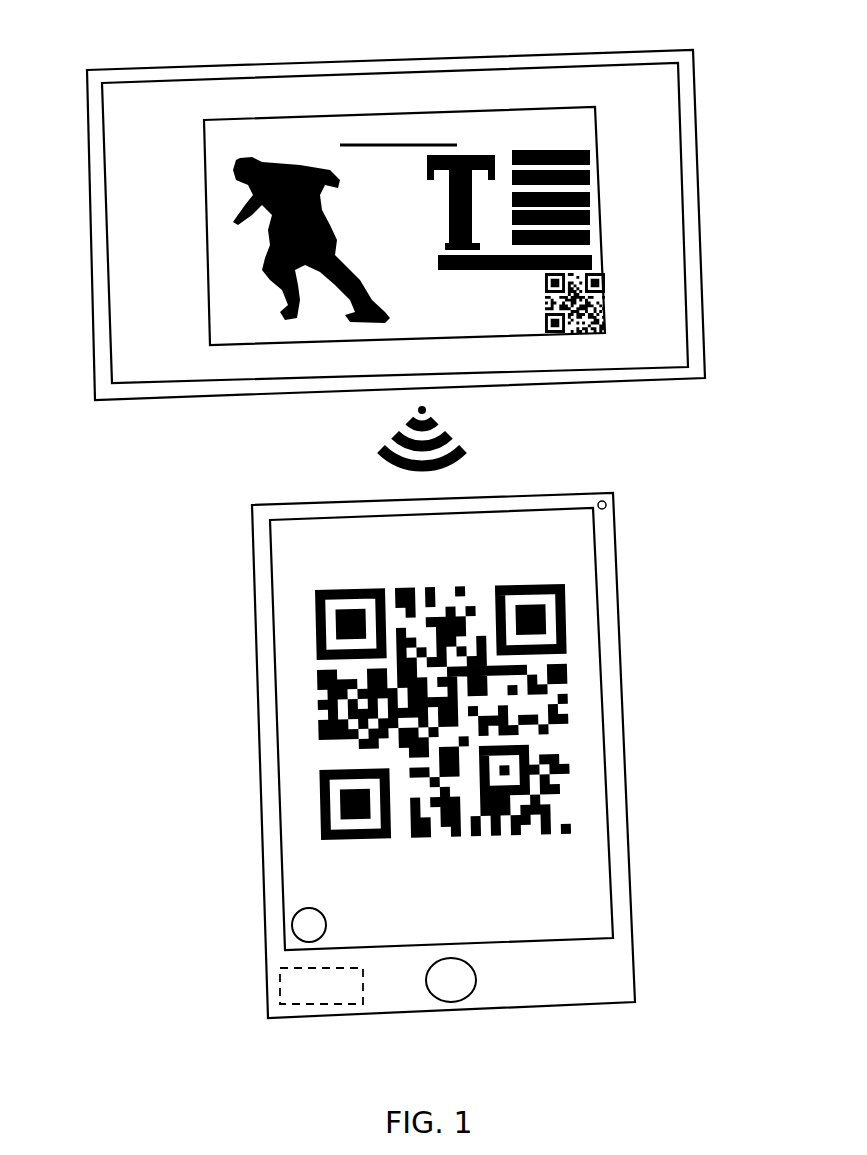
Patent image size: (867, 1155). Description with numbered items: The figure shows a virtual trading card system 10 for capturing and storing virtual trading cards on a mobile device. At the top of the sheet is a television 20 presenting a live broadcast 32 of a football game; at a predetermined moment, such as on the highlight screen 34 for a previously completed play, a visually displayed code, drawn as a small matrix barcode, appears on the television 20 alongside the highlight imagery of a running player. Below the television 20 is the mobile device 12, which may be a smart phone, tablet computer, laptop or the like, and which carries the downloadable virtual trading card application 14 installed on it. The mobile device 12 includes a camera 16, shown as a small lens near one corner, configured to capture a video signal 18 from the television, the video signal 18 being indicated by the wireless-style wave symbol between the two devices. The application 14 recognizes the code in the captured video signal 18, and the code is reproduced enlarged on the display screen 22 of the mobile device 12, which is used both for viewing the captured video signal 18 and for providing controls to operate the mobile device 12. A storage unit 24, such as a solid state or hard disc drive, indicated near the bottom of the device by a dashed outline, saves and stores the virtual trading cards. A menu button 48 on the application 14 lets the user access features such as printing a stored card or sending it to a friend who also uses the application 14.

The virtual trading card system 10 is at (126, 486).
The mobile device 12 is at (552, 500).
The virtual trading card application 14 is at (598, 903).
The camera 16 is at (608, 504).
The video signal 18 is at (448, 438).
The television 20 is at (692, 118).
The display screen 22 is at (592, 717).
The storage unit 24 is at (283, 990).
The live broadcast 32 is at (658, 183).
The highlight screen 34 is at (565, 125).
The menu button 48 is at (304, 924).